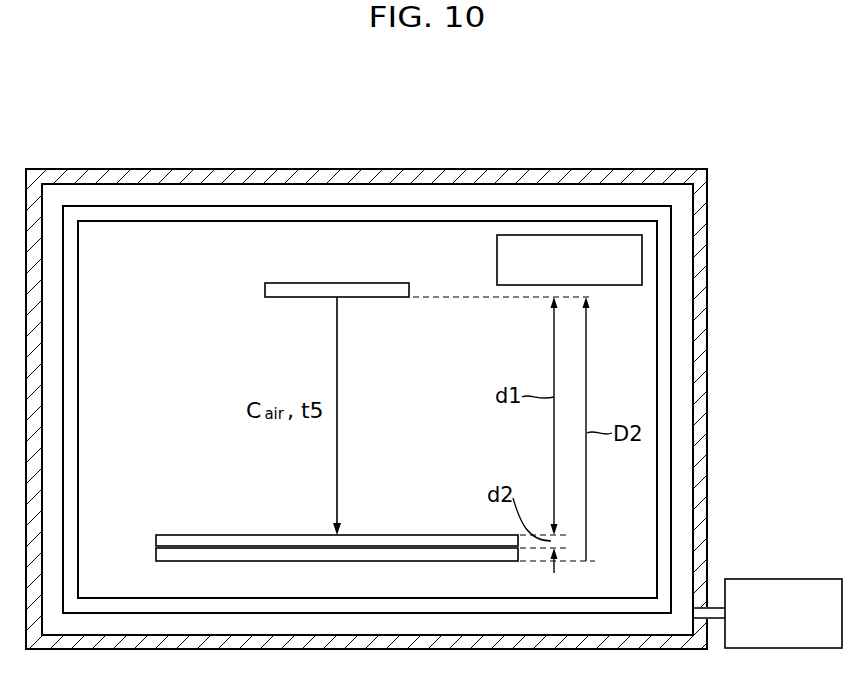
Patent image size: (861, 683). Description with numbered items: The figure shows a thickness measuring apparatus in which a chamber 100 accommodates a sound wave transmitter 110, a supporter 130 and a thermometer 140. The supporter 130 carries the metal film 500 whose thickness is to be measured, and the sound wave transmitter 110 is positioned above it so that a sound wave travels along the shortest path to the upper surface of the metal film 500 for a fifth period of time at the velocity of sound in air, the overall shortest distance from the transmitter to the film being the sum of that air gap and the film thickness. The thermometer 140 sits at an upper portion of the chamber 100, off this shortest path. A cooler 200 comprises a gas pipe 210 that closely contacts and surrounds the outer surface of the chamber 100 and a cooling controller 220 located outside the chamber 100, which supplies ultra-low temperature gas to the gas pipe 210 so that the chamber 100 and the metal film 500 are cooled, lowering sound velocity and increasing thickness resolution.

The chamber 100 is at (672, 310).
The sound wave transmitter 110 is at (265, 290).
The supporter 130 is at (158, 554).
The thermometer 140 is at (497, 262).
The cooler 200 is at (430, 409).
The gas pipe 210 is at (700, 463).
The cooling controller 220 is at (782, 579).
The metal film 500 is at (158, 541).